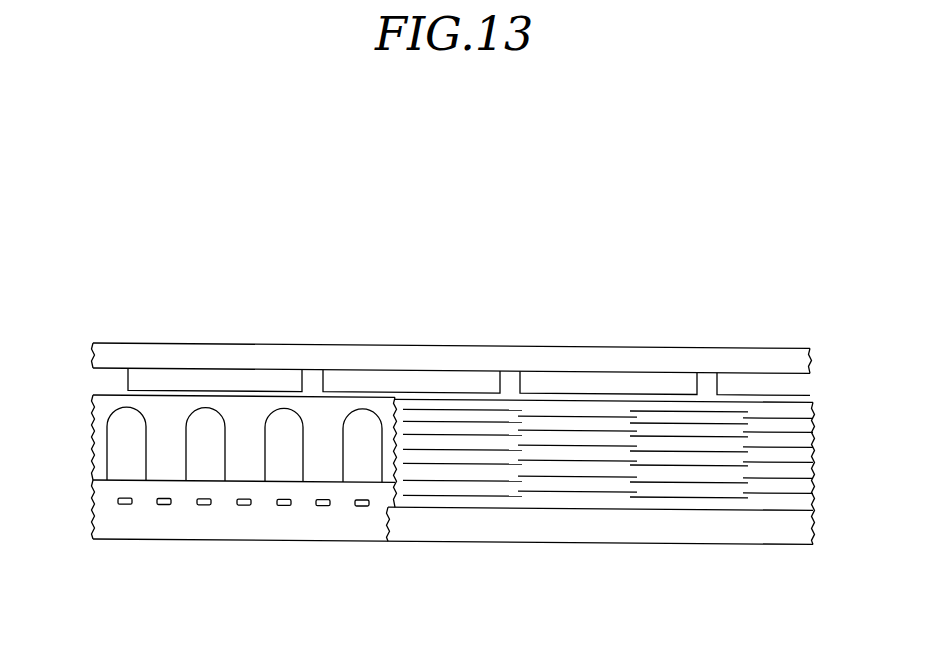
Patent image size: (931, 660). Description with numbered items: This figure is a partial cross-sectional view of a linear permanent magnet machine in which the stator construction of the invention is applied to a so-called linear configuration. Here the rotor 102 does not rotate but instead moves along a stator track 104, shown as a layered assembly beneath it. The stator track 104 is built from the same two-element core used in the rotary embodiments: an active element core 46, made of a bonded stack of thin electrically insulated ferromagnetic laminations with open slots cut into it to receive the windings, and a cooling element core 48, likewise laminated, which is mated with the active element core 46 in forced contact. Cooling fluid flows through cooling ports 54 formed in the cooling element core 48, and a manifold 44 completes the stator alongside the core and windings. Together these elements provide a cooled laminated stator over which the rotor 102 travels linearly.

The rotor 102 is at (88, 343).
The active element core 46 is at (88, 397).
The cooling element core 48 is at (88, 482).
The cooling ports 54 is at (282, 506).
The manifold 44 is at (520, 527).
The stator track 104 is at (837, 403).